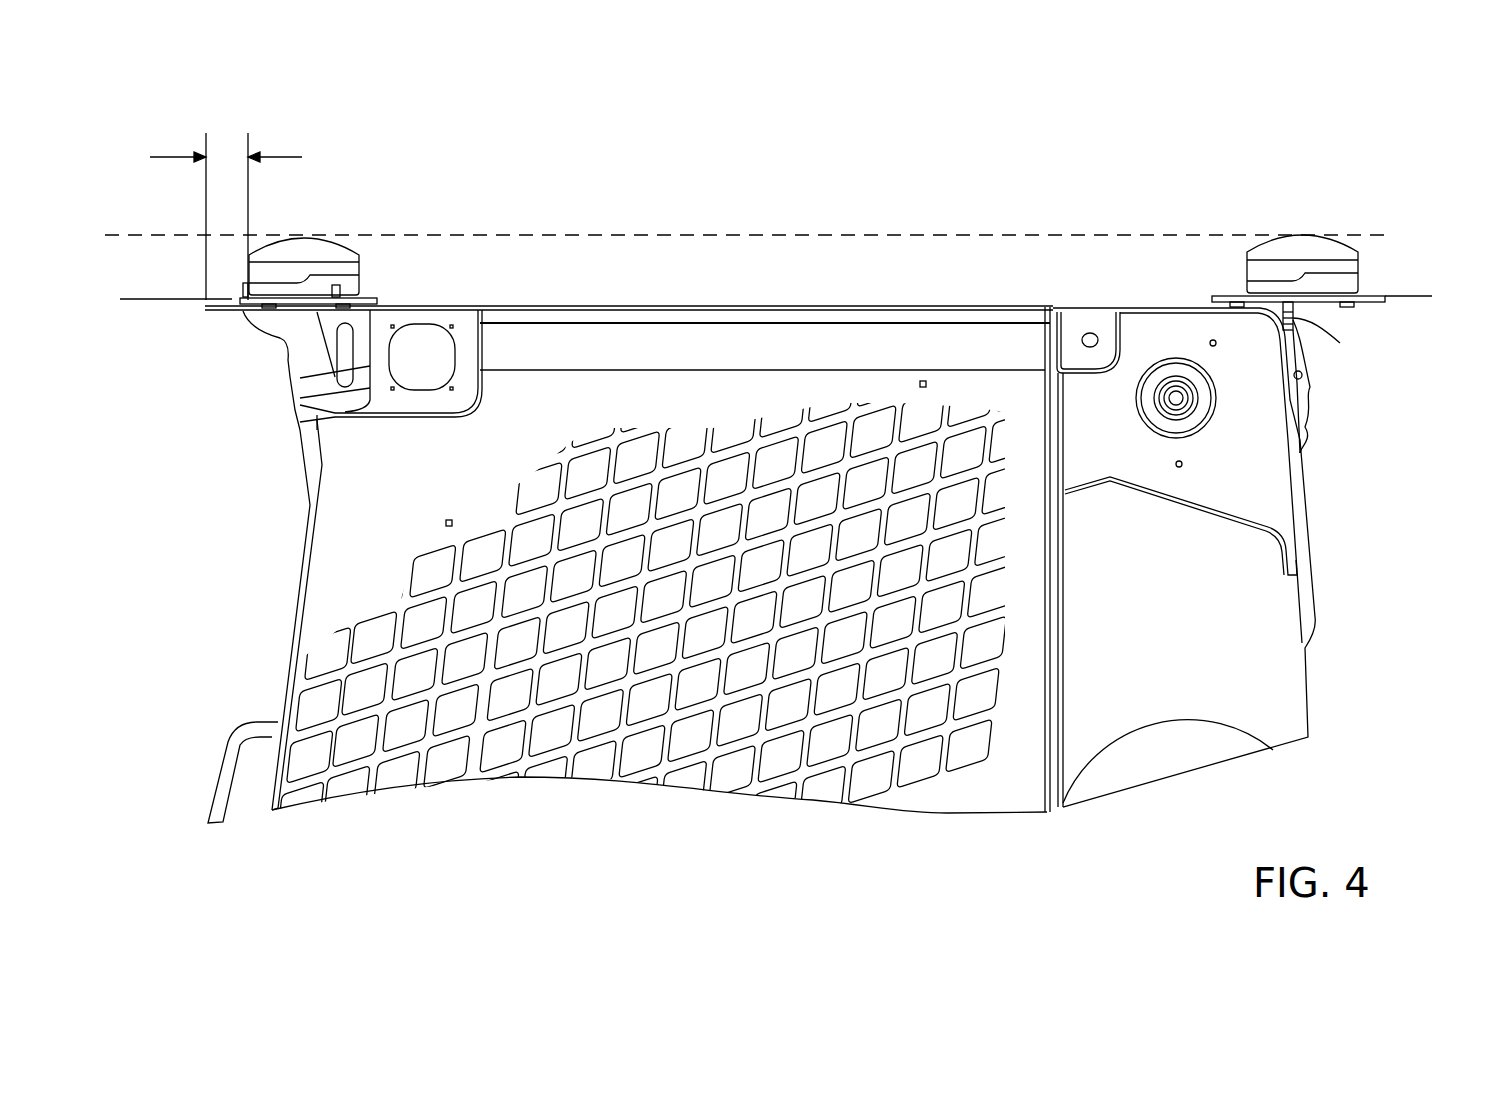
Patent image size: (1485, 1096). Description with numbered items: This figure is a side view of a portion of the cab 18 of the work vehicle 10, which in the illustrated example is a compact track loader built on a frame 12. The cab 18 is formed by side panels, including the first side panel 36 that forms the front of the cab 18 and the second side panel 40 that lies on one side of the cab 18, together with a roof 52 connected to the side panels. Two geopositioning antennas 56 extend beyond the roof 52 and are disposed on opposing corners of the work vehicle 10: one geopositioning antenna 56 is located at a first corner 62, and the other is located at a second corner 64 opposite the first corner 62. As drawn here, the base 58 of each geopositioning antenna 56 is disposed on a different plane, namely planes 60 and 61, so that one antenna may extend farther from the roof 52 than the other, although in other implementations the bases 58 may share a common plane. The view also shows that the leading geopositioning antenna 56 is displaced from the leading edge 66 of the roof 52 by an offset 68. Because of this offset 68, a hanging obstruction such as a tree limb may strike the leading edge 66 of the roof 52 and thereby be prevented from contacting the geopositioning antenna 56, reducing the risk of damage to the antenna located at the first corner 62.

The work vehicle 10 is at (810, 98).
The frame 12 is at (1262, 481).
The cab 18 is at (790, 307).
The first side panel 36 is at (310, 505).
The second side panel 40 is at (297, 607).
The roof 52 is at (670, 305).
The geopositioning antennas 56 is at (298, 273).
The base 58 is at (387, 300).
The first plane 60 is at (162, 297).
The second plane 61 is at (1420, 296).
The first corner 62 is at (283, 322).
The second corner 64 is at (1303, 317).
The leading edge 66 is at (268, 322).
The offset 68 is at (168, 157).